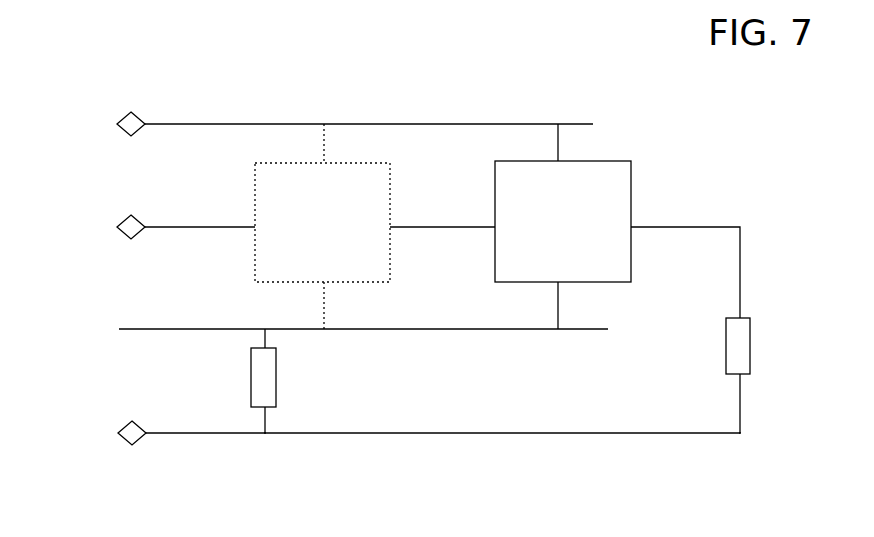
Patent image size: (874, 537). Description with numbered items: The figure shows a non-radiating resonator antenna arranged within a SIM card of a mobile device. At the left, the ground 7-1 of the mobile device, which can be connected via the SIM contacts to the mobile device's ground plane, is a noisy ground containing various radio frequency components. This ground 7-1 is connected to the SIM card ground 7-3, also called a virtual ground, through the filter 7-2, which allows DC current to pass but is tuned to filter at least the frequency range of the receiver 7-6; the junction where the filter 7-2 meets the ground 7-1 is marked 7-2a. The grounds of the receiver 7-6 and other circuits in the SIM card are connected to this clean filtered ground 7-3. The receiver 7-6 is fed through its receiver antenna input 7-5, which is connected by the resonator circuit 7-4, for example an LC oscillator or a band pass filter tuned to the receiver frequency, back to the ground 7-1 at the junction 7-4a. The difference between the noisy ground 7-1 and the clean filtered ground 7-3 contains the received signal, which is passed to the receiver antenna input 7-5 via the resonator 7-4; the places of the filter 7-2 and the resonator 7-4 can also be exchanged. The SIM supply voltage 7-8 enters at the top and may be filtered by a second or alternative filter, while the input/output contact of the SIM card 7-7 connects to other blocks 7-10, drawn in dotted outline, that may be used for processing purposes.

The ground of the mobile device 7-1 is at (125, 424).
The filter 7-2 is at (249, 361).
The node between resistor and first terminal 7-2a is at (265, 433).
The SIM card ground 7-3 is at (123, 325).
The resonator circuit 7-4 is at (752, 352).
The node between resistor and first terminal 7-4a is at (740, 433).
The receiver antenna input 7-5 is at (690, 226).
The receiver 7-6 is at (632, 170).
The input/output contact of the SIM card 7-7 is at (123, 213).
The SIM supply voltage 7-8 is at (123, 113).
The other blocks 7-10 is at (298, 163).